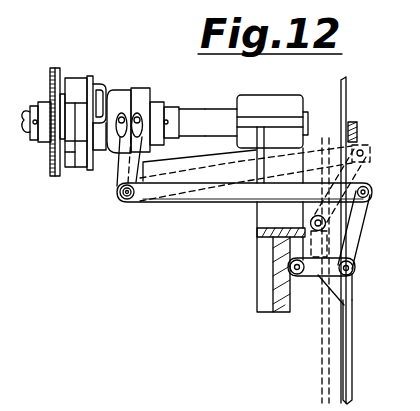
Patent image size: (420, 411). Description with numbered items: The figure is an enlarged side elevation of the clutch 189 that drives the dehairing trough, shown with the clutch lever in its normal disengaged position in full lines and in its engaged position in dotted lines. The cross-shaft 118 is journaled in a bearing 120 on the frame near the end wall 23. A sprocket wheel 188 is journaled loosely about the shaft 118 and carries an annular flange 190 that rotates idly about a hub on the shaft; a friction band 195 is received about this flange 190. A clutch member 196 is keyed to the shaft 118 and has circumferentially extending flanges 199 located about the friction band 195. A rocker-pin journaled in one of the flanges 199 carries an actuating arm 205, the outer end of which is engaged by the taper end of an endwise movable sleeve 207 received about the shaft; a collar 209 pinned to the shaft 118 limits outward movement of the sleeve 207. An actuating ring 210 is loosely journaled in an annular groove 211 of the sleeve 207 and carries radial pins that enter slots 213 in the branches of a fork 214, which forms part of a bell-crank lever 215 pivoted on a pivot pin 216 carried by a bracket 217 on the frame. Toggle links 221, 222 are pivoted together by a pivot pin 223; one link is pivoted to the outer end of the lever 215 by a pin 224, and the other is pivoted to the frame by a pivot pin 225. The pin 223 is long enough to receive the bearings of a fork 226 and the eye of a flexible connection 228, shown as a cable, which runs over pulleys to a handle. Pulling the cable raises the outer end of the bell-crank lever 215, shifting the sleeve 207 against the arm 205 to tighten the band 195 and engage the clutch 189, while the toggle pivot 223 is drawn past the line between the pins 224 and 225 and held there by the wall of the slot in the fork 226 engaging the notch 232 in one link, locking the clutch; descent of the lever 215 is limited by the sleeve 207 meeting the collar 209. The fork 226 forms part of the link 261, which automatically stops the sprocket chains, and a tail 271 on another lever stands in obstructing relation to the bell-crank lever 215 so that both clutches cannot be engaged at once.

The end wall 23 is at (267, 218).
The cross-shaft 118 is at (218, 107).
The bearing 120 is at (270, 104).
The sprocket wheel 188 is at (53, 174).
The clutch 189 is at (77, 60).
The annular flange 190 is at (62, 132).
The friction band 195 is at (73, 160).
The clutch member 196 is at (90, 75).
The circumferentially extending flanges 199 is at (62, 168).
The actuating arm 205 is at (101, 83).
The endwise movable sleeve 207 is at (116, 96).
The collar 209 is at (168, 128).
The actuating ring 210 is at (141, 99).
The annular groove 211 is at (150, 108).
The slots 213 is at (136, 170).
The fork 214 is at (78, 128).
The bell-crank lever 215 is at (185, 197).
The pivot pin 216 is at (121, 203).
The bracket 217 is at (203, 166).
The toggle link 221 is at (356, 241).
The toggle link 222 is at (317, 282).
The pivot pin 223 is at (353, 268).
The pin 224 is at (369, 193).
The pivot pin 225 is at (299, 275).
The fork 226 is at (345, 283).
The flexible connection 228 is at (346, 109).
The notch 232 is at (347, 306).
The link 261 is at (353, 362).
The tail 271 is at (358, 129).